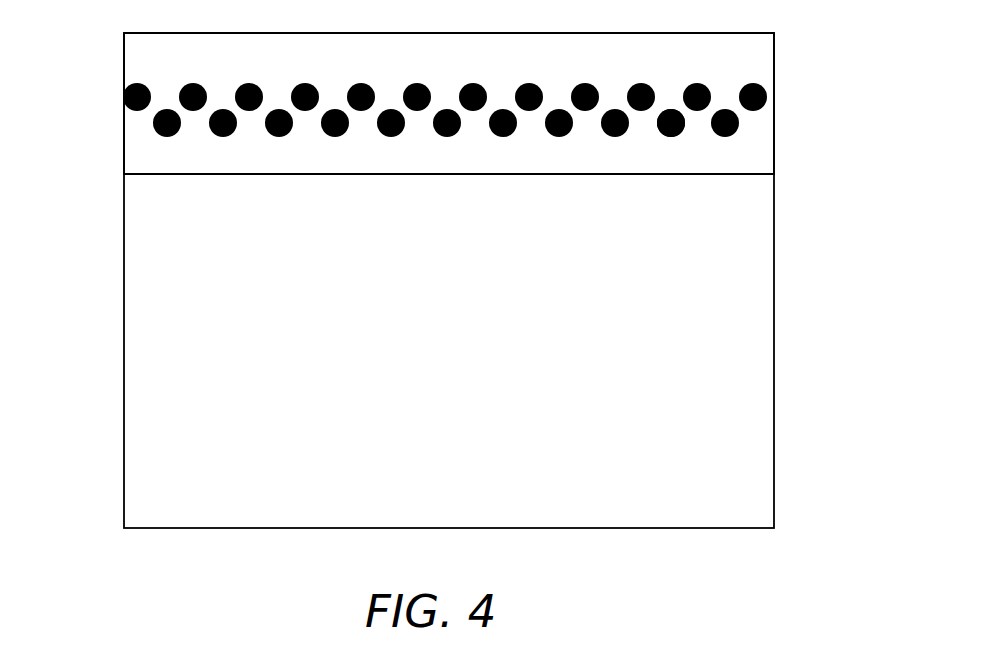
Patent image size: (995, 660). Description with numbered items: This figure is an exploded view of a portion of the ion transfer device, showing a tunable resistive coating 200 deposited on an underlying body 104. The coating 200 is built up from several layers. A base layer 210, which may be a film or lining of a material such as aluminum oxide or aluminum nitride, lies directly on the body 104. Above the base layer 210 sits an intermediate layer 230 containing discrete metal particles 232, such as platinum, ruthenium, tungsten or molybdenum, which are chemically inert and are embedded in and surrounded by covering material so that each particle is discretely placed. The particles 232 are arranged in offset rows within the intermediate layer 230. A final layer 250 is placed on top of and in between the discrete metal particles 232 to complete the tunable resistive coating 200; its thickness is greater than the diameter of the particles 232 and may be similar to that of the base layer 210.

The substrate 104 is at (440, 352).
The tunable resistive coating 200 is at (783, 34).
The final layer 250 is at (113, 34).
The intermediate layer 230 is at (113, 81).
The discrete metal particles 232 is at (677, 150).
The base layer 210 is at (113, 133).